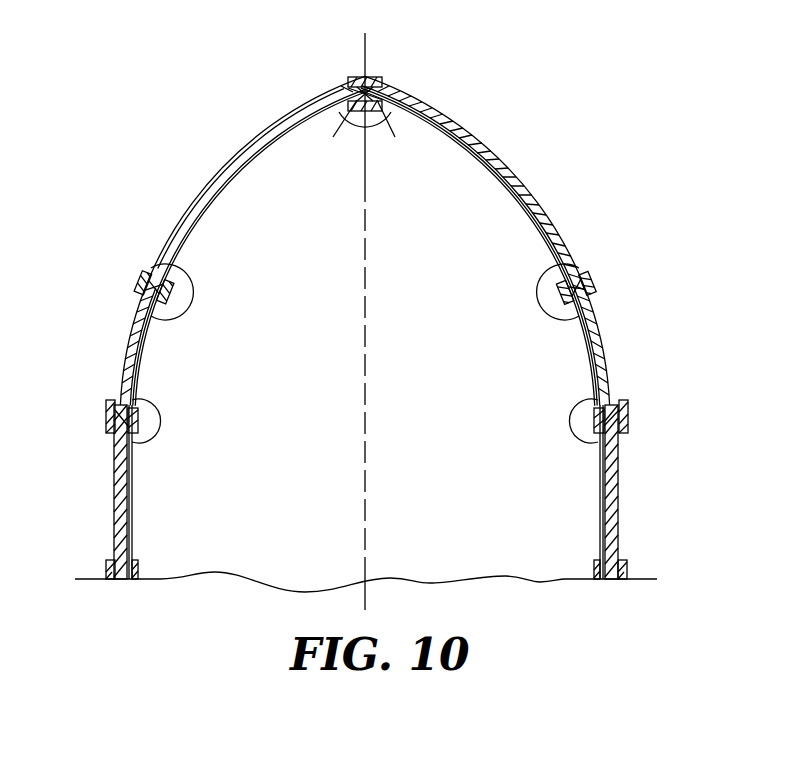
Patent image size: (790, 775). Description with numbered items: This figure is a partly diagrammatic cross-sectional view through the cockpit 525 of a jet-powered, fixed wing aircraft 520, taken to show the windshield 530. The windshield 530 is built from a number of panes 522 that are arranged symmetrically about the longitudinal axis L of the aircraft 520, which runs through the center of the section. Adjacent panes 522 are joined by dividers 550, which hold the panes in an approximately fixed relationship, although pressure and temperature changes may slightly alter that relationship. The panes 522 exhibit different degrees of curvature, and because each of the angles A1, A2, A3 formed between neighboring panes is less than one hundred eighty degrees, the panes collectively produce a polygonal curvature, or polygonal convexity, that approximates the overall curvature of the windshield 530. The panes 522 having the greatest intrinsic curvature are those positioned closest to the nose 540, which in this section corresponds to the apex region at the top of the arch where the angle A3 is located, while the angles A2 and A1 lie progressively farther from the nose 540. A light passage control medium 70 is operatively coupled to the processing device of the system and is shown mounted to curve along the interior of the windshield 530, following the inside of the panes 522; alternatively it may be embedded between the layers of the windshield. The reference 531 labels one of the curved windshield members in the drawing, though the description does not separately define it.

The aircraft 520 is at (370, 318).
The panes 522 is at (206, 182).
The cockpit 525 is at (450, 431).
The windshield 530 is at (273, 124).
The arch beam segment 531 is at (470, 127).
The nose 540 is at (378, 80).
The dividers 550 is at (355, 78).
The light passage control medium 70 is at (256, 166).
The longitudinal axis L is at (362, 351).
The angle A1 is at (365, 422).
The angle A2 is at (365, 295).
The angle A3 is at (364, 134).